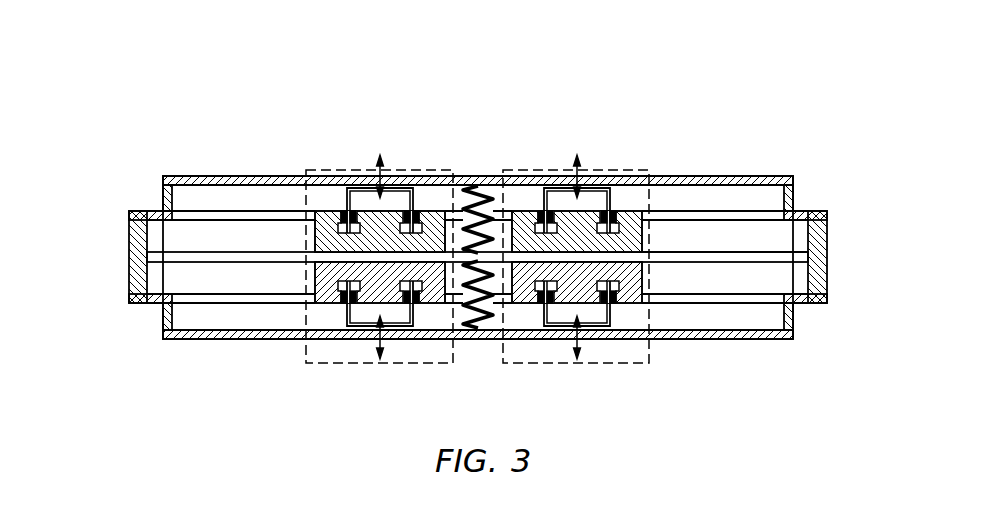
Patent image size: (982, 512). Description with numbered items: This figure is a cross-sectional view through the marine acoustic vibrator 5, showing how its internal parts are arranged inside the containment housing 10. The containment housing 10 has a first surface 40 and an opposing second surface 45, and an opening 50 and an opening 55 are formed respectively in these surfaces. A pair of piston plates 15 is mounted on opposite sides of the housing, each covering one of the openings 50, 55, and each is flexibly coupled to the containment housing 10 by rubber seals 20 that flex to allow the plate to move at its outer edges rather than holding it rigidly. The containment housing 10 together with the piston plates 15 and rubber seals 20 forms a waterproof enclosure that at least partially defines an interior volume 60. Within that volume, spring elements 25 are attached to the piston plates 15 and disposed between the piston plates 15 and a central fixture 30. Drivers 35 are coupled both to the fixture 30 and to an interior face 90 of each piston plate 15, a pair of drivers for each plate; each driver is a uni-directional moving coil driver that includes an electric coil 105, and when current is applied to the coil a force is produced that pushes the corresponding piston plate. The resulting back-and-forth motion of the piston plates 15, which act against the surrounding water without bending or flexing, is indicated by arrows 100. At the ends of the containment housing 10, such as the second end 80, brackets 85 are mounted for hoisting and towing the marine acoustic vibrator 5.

The marine acoustic vibrator 5 is at (797, 74).
The containment housing 10 is at (827, 272).
The piston plates 15 is at (737, 177).
The rubber seals 20 is at (163, 207).
The spring elements 25 is at (481, 185).
The fixture 30 is at (675, 252).
The drivers 35 is at (338, 168).
The first surface 40 is at (160, 210).
The second surface 45 is at (152, 304).
The opening 50 is at (193, 219).
The opening 55 is at (237, 303).
The interior volume 60 is at (170, 274).
The second end 80 is at (411, 211).
The brackets 85 is at (306, 212).
The interior face 90 is at (204, 193).
The arrows 100 is at (384, 170).
The electric coil 105 is at (420, 214).